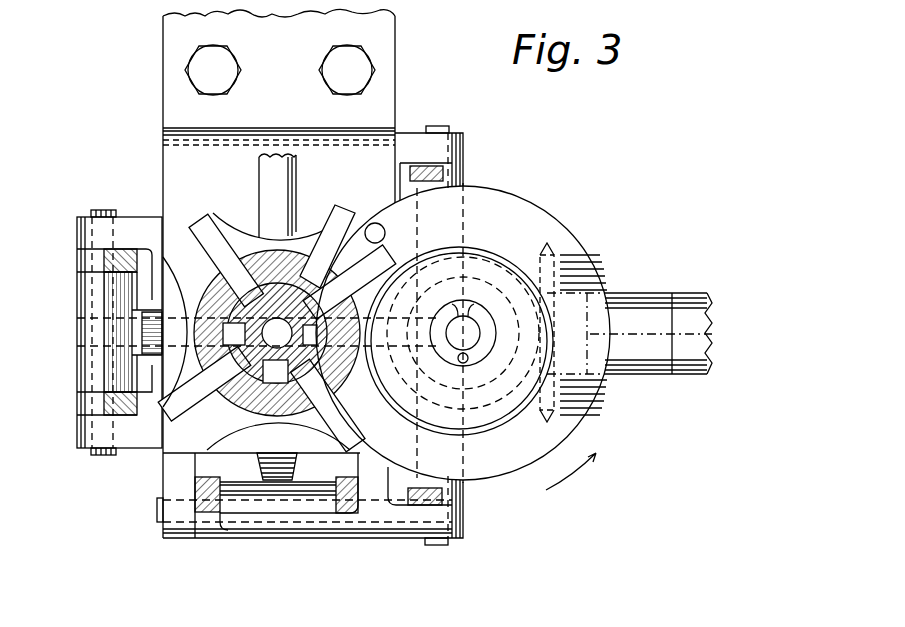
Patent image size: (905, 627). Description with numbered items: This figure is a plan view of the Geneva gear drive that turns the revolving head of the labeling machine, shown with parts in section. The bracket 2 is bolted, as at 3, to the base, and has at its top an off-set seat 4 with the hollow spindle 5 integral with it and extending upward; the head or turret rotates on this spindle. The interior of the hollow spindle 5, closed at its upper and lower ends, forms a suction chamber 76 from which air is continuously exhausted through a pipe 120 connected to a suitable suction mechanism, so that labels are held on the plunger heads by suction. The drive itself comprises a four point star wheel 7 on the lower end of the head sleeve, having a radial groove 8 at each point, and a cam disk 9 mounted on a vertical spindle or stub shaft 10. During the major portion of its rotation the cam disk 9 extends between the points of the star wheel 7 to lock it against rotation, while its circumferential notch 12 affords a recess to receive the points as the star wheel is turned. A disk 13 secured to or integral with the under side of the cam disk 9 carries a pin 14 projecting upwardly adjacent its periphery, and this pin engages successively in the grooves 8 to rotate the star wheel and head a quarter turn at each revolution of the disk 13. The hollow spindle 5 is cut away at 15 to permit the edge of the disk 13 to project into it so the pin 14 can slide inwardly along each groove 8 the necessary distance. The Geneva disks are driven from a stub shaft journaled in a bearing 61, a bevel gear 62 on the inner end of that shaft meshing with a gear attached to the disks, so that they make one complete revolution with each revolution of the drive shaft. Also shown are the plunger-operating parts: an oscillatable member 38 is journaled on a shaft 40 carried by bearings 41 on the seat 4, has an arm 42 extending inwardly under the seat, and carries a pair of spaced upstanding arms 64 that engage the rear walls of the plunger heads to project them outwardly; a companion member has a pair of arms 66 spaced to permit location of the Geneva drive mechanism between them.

The bracket 2 is at (395, 45).
The bolts 3 is at (203, 65).
The off-set seat 4 is at (178, 163).
The pipe 120 is at (262, 168).
The radial groove 8 is at (216, 225).
The suction chamber 76 is at (277, 312).
The hollow spindle 5 is at (256, 412).
The four point star wheel 7 is at (317, 232).
The pin 14 is at (372, 223).
The arms 66 is at (446, 173).
The disk 13 is at (565, 223).
The cam disk 9 is at (504, 253).
The circumferential notch 12 is at (465, 263).
The vertical spindle or stub shaft 10 is at (475, 332).
The bevel gear 62 is at (583, 424).
The bearing 61 is at (636, 296).
The bearings 41 is at (78, 226).
The upstanding arms 64 is at (115, 410).
The arm 42 is at (145, 312).
The shaft 40 is at (95, 456).
The oscillatable member 38 is at (203, 538).
The cut away 15 is at (306, 455).